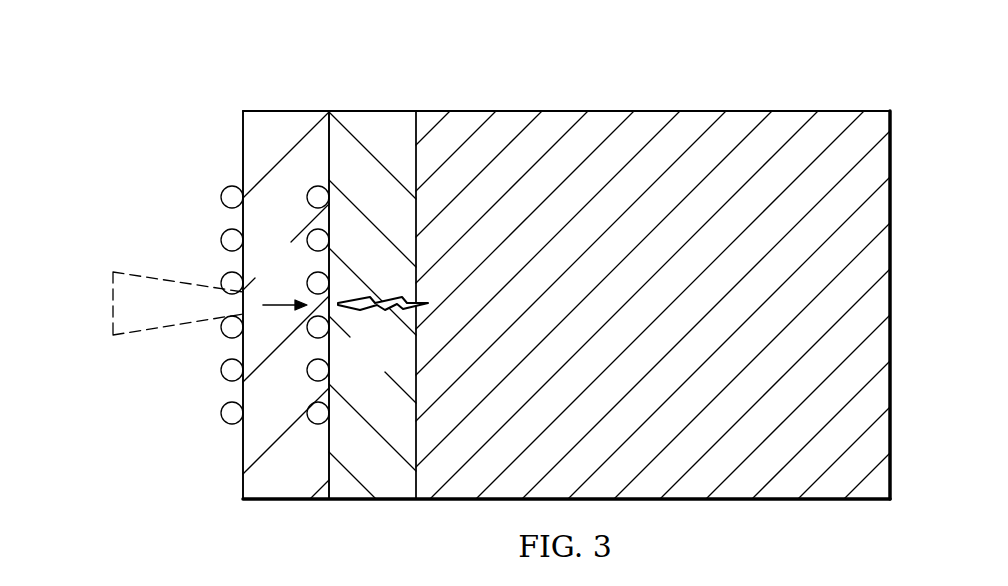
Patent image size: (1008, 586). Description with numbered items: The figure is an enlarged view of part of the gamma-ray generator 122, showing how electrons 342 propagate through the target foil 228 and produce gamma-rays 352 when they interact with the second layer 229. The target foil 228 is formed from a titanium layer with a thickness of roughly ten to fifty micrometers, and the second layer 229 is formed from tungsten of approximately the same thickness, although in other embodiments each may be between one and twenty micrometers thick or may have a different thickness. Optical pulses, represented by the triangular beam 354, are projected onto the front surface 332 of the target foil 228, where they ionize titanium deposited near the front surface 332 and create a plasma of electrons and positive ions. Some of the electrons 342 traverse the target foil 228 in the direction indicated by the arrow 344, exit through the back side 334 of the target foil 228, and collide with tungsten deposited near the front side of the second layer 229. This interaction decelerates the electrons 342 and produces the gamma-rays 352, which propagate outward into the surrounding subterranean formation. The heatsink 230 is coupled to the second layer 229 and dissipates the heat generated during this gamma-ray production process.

The gamma-ray generator 122 is at (821, 73).
The target foil 228 is at (287, 120).
The second layer 229 is at (390, 120).
The heatsink 230 is at (654, 120).
The front surface 332 is at (244, 134).
The back side 334 is at (330, 134).
The electrons 342 is at (221, 196).
The arrow 344 is at (283, 300).
The gamma-rays 352 is at (372, 315).
The triangular beam 354 is at (112, 303).